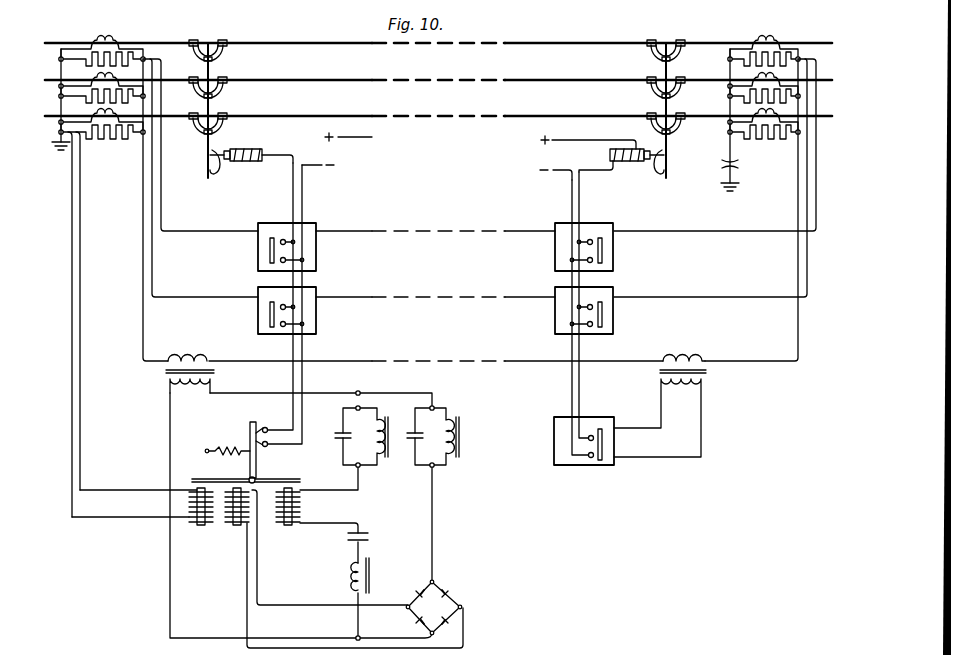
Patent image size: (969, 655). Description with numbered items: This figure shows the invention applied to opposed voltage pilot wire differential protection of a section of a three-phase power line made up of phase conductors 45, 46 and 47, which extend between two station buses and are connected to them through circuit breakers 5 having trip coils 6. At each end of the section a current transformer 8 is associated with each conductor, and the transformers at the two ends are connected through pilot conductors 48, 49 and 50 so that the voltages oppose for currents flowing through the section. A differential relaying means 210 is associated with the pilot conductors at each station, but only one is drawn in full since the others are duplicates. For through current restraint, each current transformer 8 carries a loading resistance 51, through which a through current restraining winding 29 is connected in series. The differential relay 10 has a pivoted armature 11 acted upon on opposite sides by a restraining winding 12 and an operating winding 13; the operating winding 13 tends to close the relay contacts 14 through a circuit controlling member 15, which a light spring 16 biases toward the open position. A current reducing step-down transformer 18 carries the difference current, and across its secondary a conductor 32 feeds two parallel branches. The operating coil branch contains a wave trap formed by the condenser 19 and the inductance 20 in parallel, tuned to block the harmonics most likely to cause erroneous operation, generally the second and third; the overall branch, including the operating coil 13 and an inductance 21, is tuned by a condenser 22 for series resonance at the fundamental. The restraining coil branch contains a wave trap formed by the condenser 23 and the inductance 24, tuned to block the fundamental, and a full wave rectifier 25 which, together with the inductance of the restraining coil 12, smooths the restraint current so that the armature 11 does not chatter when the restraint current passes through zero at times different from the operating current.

The circuit breaker 5 is at (205, 150).
The trip coil 6 is at (240, 163).
The current transformer 8 is at (120, 38).
The differential relay 10 is at (203, 479).
The pivoted armature 11 is at (272, 478).
The restraining winding 12 is at (226, 522).
The operating winding 13 is at (304, 504).
The relay contacts 14 is at (269, 428).
The circuit controlling member 15 is at (248, 428).
The light spring 16 is at (215, 456).
The step-down transformer 18 is at (214, 371).
The condenser 19 is at (336, 435).
The inductance 20 is at (370, 436).
The inductance 21 is at (351, 577).
The condenser 22 is at (368, 537).
The condenser 23 is at (413, 446).
The inductance 24 is at (440, 436).
The full wave rectifier 25 is at (434, 607).
The through current restraining winding 29 is at (190, 520).
The conductor 32 is at (212, 394).
The phase conductor 45 is at (585, 116).
The phase conductor 46 is at (585, 80).
The phase conductor 47 is at (592, 43).
The pilot conductor 48 is at (354, 361).
The pilot conductor 49 is at (362, 297).
The pilot conductor 50 is at (362, 231).
The loading resistance 51 is at (88, 62).
The differential relaying means 210 is at (258, 252).